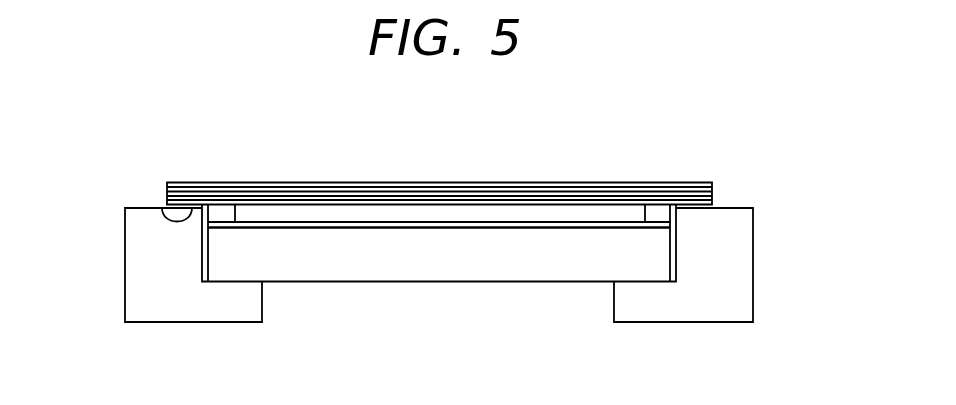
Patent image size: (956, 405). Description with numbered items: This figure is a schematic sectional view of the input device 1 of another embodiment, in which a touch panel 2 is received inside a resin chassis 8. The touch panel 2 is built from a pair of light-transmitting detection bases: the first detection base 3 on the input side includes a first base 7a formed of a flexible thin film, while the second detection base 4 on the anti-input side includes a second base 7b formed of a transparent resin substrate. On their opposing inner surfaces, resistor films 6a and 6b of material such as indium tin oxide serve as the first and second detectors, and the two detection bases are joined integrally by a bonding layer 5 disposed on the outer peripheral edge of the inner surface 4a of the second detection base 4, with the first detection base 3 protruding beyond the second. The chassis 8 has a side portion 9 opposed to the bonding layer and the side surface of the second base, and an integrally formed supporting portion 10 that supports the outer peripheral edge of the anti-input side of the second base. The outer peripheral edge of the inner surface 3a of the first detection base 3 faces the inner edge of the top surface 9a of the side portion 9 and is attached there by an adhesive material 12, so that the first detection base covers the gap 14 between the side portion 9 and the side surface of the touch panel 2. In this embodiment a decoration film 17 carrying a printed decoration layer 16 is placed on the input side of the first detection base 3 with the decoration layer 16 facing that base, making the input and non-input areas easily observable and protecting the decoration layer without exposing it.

The input device 1 is at (747, 185).
The touch panel 2 is at (508, 152).
The first detection base 3 is at (443, 188).
The inner surface of first detection base 3a is at (165, 215).
The second detection base 4 is at (497, 283).
The inner surface of second detection base 4a is at (255, 213).
The bonding layer 5 is at (226, 208).
The resistor film 6a is at (288, 200).
The resistor film 6b is at (385, 229).
The first base 7a is at (555, 198).
The second base 7b is at (450, 273).
The chassis 8 is at (755, 243).
The side portion 9 is at (133, 263).
The top surface 9a is at (157, 210).
The supporting portion 10 is at (195, 312).
The adhesive material 12 is at (688, 185).
The gap 14 is at (676, 268).
The decoration layer 16 is at (214, 198).
The decoration film 17 is at (352, 183).